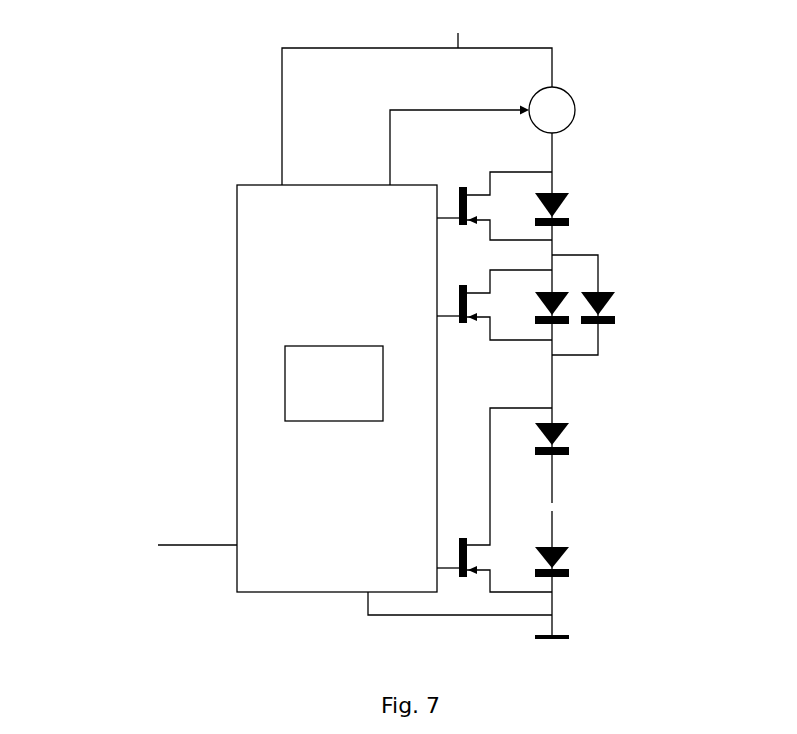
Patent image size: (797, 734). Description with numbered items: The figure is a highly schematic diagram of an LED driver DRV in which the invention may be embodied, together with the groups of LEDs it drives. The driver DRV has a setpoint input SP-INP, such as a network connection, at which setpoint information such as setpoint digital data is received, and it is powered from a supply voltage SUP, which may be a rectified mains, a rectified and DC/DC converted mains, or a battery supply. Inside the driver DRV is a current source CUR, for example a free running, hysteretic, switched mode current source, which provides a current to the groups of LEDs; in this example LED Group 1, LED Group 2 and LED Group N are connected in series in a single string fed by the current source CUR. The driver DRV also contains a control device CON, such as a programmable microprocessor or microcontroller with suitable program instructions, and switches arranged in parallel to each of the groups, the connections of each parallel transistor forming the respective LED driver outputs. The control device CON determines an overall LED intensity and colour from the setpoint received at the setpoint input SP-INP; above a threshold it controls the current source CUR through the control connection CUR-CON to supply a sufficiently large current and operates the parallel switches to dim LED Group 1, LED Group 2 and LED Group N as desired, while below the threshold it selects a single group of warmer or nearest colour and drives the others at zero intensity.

The supply voltage SUP is at (417, 93).
The current source CUR is at (582, 129).
The current source control CUR-CON is at (459, 131).
The LED driver DRV is at (246, 158).
The control device CON is at (334, 383).
The setpoint input SP-INP is at (125, 528).
The first LED group LED Group 1 is at (611, 213).
The second LED group LED Group 2 is at (639, 331).
The N-th LED group LED Group N is at (614, 522).